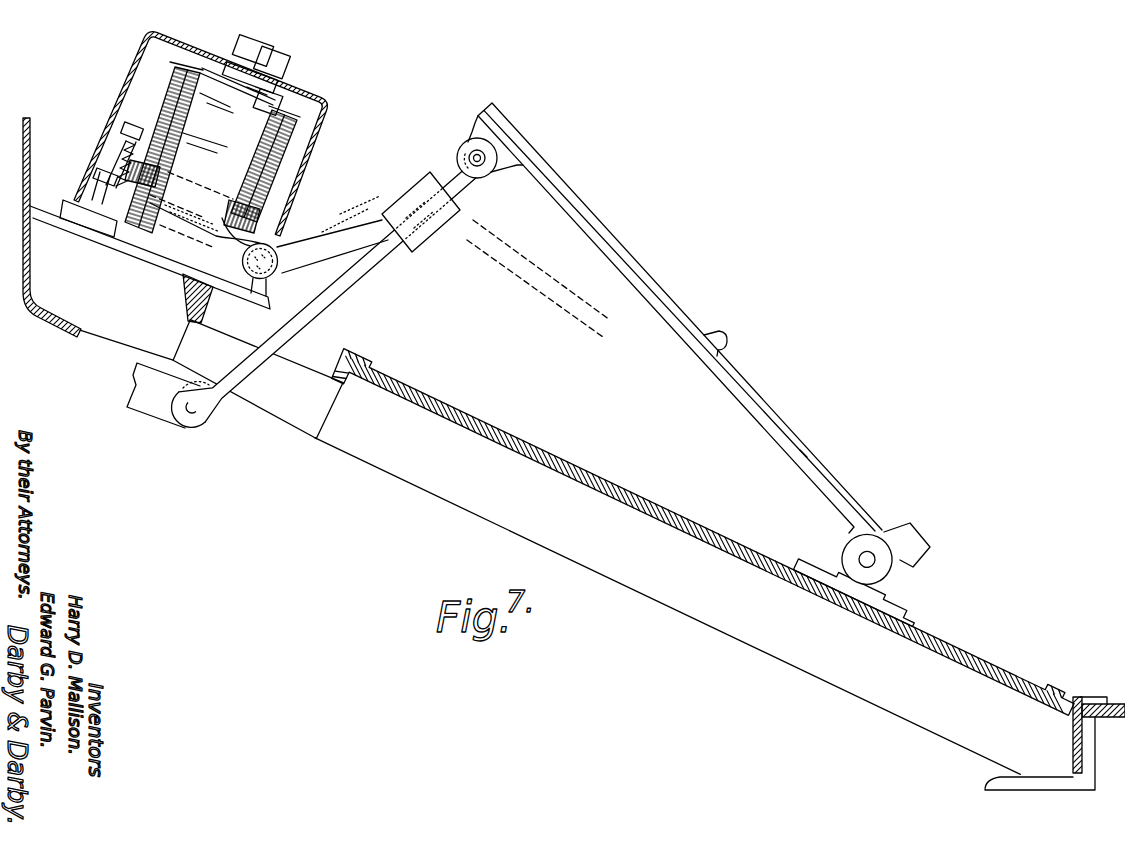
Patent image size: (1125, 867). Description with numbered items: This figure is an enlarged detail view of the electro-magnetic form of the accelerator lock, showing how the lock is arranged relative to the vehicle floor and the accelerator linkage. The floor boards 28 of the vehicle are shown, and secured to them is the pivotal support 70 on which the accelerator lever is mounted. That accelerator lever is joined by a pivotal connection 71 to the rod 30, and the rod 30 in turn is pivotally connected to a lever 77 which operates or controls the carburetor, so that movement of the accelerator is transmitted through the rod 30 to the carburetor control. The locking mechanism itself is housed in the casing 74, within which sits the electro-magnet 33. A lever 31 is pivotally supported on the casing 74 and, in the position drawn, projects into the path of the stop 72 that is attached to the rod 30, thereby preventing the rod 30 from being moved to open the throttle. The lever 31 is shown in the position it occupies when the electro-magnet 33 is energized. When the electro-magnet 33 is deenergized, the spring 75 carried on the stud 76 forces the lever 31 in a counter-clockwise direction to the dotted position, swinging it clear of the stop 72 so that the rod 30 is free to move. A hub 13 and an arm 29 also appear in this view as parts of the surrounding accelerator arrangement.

The hub 13 is at (268, 268).
The floor boards 28 is at (608, 452).
The arm 29 is at (752, 388).
The rod 30 is at (351, 273).
The lever 31 is at (290, 250).
The electro-magnet 33 is at (292, 152).
The pivotal support 70 is at (888, 592).
The pivotal connection 71 is at (474, 150).
The stop 72 is at (421, 238).
The casing 74 is at (332, 103).
The spring 75 is at (112, 152).
The stud 76 is at (100, 188).
The lever 77 is at (146, 409).